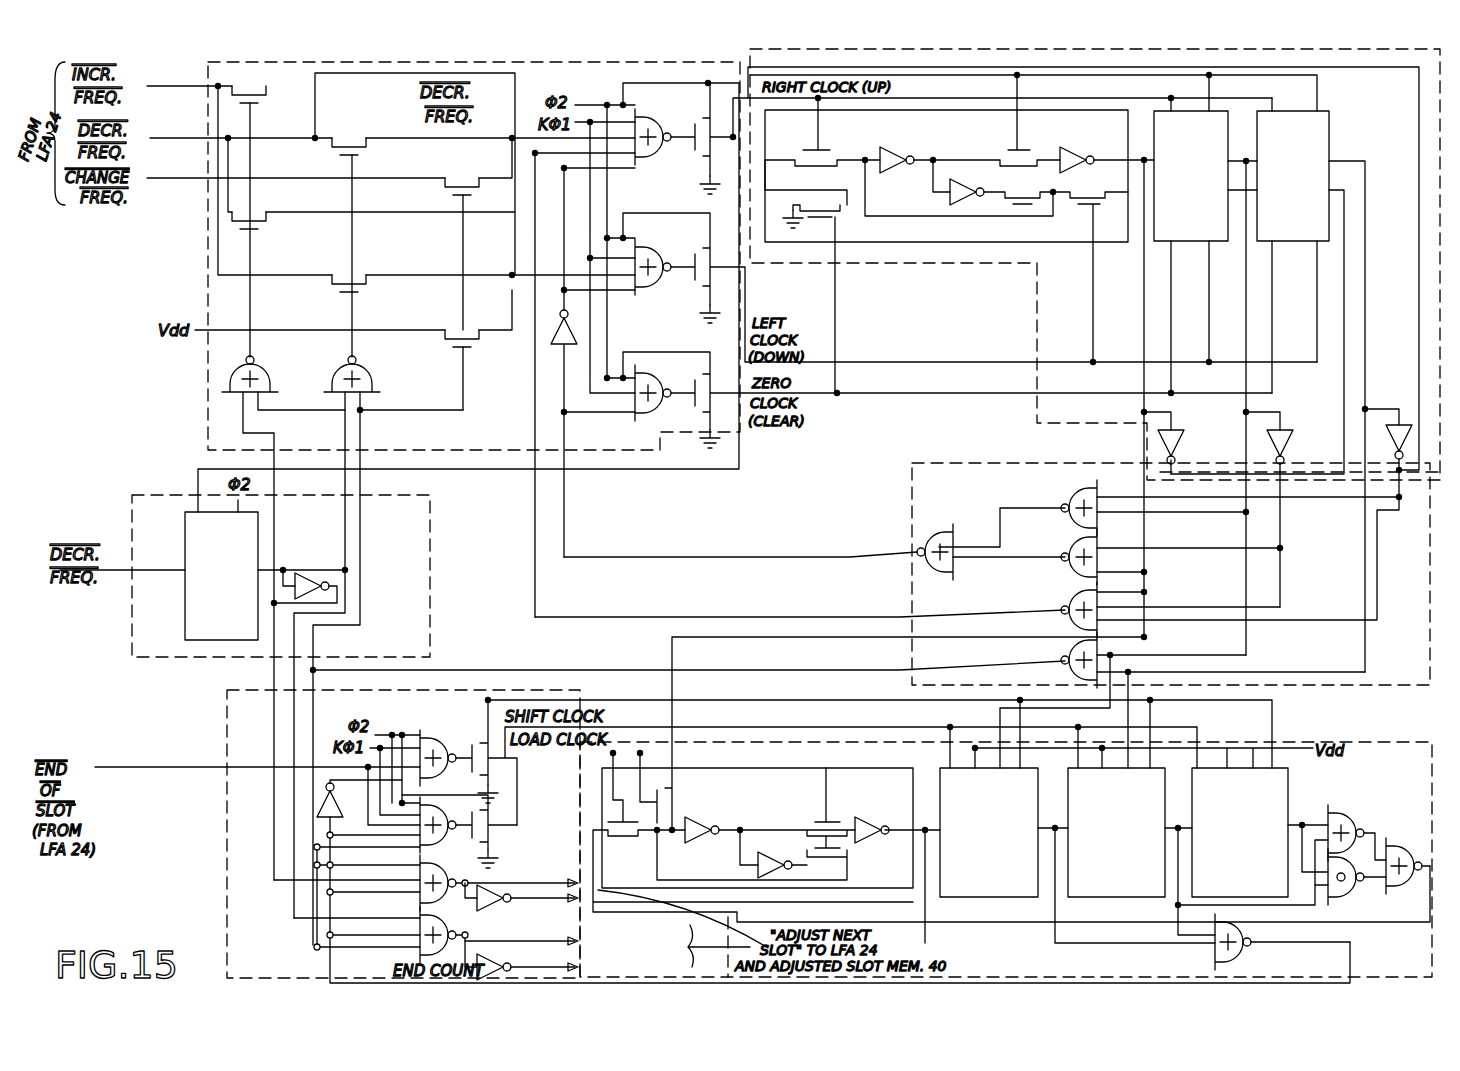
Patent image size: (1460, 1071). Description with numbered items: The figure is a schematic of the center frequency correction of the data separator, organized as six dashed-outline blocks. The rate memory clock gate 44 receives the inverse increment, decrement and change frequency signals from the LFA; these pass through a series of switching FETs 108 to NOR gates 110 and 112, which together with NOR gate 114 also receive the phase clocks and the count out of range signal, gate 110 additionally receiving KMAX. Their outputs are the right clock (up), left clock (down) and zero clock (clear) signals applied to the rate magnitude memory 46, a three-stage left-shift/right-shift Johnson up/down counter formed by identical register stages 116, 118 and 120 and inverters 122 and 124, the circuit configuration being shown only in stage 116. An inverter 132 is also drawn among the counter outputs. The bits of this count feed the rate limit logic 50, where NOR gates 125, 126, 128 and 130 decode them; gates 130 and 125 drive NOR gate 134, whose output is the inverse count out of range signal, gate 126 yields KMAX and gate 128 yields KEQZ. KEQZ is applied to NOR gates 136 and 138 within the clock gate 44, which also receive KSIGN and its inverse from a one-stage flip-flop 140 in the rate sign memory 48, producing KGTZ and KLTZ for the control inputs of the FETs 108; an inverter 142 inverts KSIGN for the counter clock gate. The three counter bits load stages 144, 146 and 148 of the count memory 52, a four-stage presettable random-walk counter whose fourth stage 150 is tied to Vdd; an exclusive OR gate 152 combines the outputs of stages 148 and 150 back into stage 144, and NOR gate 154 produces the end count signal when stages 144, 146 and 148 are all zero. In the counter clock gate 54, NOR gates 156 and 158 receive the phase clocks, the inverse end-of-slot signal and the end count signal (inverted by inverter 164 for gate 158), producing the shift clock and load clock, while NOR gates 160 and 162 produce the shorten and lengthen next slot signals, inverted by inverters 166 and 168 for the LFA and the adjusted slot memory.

The rate memory clock gate 44 is at (206, 190).
The rate magnitude memory 46 is at (950, 262).
The rate sign memory 48 is at (430, 585).
The rate limit logic 50 is at (1085, 463).
The count memory 52 is at (1370, 742).
The counter clock gate 54 is at (227, 836).
The switching FETs 108 is at (434, 258).
The NOR gate 110 is at (648, 120).
The NOR gate 112 is at (650, 252).
The NOR gate 114 is at (650, 388).
The first register stage 116 is at (1014, 232).
The second register stage 118 is at (1182, 243).
The third register stage 120 is at (1287, 243).
The inverter 122 is at (1180, 448).
The inverter 124 is at (1406, 428).
The NOR gate 125 is at (1062, 548).
The NOR gate 126 is at (1065, 598).
The NOR gate 128 is at (1065, 653).
The NOR gate 130 is at (1091, 495).
The inverter 132 is at (1288, 448).
The NOR gate 134 is at (940, 536).
The NOR gate 136 is at (270, 378).
The NOR gate 138 is at (370, 378).
The one-stage flip-flop 140 is at (185, 625).
The inverter 142 is at (303, 574).
The first count memory stage 144 is at (742, 797).
The second count memory stage 146 is at (1077, 855).
The third count memory stage 148 is at (1141, 851).
The fourth count memory stage 150 is at (1253, 836).
The exclusive OR gate 152 is at (1390, 818).
The NOR gate 154 is at (1243, 943).
The NOR gate 156 is at (443, 748).
The NOR gate 158 is at (446, 818).
The NOR gate 160 is at (430, 866).
The NOR gate 162 is at (436, 916).
The inverter 164 is at (338, 812).
The inverter 166 is at (490, 900).
The inverter 168 is at (508, 950).